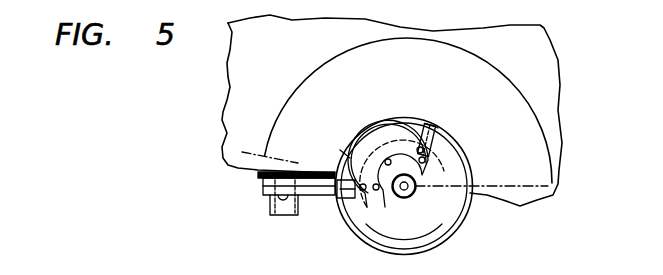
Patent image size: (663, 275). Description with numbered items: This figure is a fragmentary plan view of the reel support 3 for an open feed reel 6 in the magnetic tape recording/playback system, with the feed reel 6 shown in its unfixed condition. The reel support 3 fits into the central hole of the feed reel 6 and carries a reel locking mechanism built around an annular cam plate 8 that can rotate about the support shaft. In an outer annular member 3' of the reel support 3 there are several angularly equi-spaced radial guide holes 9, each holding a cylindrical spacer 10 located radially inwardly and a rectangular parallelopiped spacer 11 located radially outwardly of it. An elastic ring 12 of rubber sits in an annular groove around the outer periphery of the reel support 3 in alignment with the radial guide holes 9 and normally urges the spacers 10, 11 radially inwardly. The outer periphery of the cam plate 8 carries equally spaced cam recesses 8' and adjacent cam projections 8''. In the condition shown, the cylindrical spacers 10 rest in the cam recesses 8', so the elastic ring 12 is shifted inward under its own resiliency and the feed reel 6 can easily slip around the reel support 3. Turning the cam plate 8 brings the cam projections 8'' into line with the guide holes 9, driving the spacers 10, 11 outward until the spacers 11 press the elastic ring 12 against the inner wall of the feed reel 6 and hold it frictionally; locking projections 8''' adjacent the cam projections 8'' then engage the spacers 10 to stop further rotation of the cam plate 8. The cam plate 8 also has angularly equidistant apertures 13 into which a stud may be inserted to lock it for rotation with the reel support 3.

The reel support 3 is at (442, 186).
The outer annular member 3' is at (392, 148).
The feed reel 6 is at (304, 80).
The annular cam plate 8 is at (382, 123).
The cam recesses 8' is at (331, 139).
The cam projections 8'' is at (436, 119).
The locking projections 8''' is at (412, 180).
The radial guide holes 9 is at (349, 199).
The cylindrical spacer 10 is at (424, 150).
The spacer 11 is at (338, 196).
The elastic ring 12 is at (438, 126).
The apertures 13 is at (437, 165).